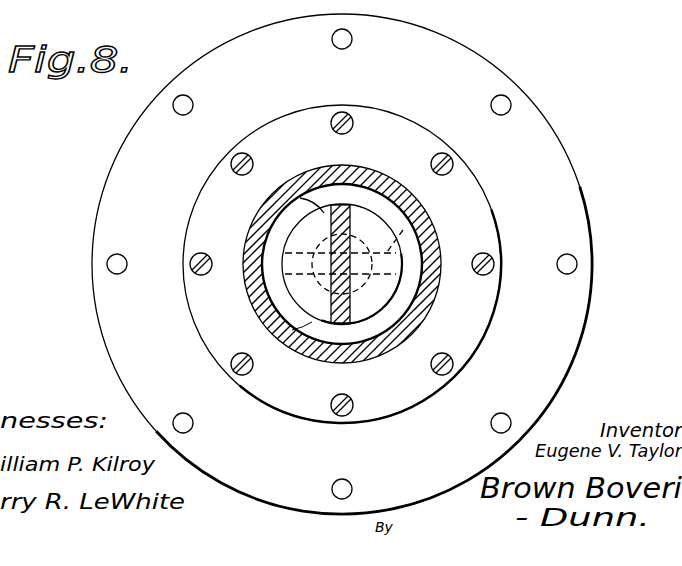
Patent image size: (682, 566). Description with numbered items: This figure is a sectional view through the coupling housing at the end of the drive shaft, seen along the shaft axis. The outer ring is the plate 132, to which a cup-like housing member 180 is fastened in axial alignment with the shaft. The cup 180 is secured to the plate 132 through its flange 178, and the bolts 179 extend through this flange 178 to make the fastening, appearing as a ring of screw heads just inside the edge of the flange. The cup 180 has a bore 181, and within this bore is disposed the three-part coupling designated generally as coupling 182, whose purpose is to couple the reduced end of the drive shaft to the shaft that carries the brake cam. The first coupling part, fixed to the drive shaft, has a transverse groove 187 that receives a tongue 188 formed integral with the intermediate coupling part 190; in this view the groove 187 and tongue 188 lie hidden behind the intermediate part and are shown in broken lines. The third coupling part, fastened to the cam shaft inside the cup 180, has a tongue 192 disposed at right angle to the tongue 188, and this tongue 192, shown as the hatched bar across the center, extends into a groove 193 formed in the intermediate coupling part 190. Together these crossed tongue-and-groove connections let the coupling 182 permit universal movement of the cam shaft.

The plate 132 is at (532, 120).
The flange 178 is at (473, 205).
The bolts 179 is at (351, 127).
The cup-like housing member 180 is at (430, 294).
The bore 181 is at (395, 303).
The coupling 182 is at (311, 324).
The transverse groove 187 is at (378, 252).
The tongue 188 is at (412, 222).
The intermediate coupling part 190 is at (298, 238).
The tongue 192 is at (343, 208).
The groove 193 is at (300, 198).